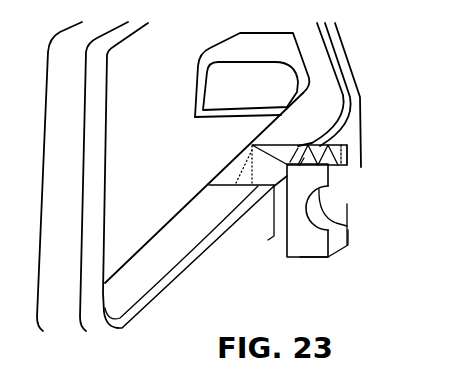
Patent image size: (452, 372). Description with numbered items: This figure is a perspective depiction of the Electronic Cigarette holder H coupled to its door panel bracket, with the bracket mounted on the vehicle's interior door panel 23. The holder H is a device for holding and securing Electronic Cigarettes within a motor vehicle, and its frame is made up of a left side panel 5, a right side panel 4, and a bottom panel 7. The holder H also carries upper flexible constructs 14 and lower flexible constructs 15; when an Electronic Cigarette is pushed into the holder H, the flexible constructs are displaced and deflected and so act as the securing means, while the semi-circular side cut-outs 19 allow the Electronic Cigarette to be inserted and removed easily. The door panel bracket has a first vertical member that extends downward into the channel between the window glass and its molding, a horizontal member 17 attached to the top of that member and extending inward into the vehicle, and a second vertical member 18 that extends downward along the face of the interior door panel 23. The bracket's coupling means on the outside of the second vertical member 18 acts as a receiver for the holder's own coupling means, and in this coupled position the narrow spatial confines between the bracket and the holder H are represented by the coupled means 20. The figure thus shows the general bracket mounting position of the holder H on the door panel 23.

The interior door panel 23 is at (347, 127).
The right side panel 4 is at (350, 145).
The upper flexible constructs 14 is at (345, 163).
The semi-circular side cut-outs 19 is at (335, 193).
The lower flexible constructs 15 is at (333, 224).
The bottom panel 7 is at (337, 246).
The holder H is at (323, 250).
The left side panel 5 is at (307, 245).
The coupled means 20 is at (277, 228).
The second vertical member 18 is at (279, 203).
The horizontal member 17 is at (225, 179).